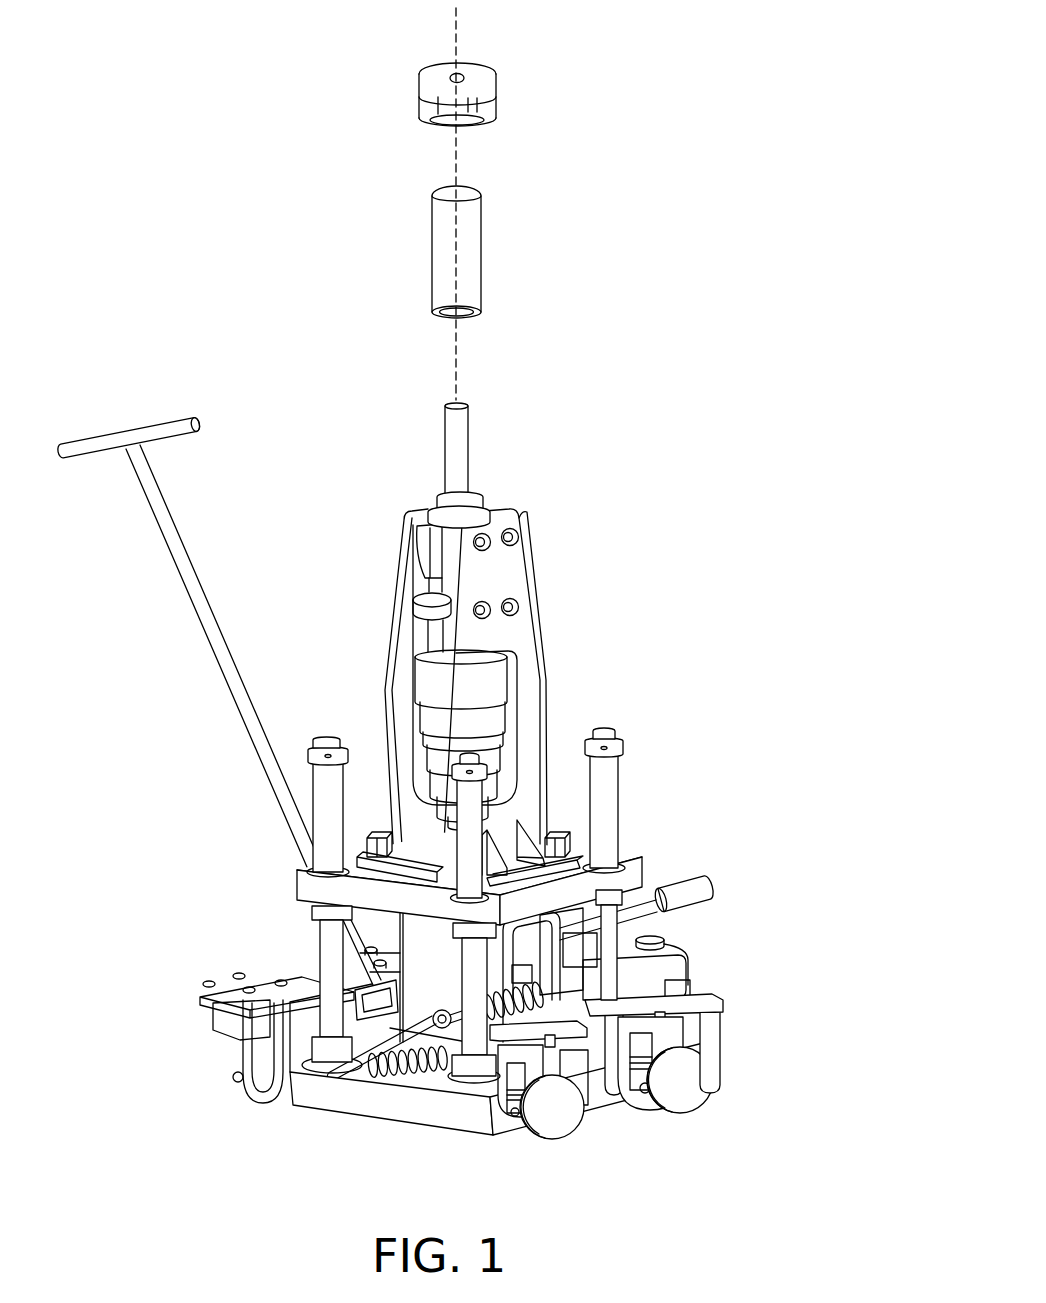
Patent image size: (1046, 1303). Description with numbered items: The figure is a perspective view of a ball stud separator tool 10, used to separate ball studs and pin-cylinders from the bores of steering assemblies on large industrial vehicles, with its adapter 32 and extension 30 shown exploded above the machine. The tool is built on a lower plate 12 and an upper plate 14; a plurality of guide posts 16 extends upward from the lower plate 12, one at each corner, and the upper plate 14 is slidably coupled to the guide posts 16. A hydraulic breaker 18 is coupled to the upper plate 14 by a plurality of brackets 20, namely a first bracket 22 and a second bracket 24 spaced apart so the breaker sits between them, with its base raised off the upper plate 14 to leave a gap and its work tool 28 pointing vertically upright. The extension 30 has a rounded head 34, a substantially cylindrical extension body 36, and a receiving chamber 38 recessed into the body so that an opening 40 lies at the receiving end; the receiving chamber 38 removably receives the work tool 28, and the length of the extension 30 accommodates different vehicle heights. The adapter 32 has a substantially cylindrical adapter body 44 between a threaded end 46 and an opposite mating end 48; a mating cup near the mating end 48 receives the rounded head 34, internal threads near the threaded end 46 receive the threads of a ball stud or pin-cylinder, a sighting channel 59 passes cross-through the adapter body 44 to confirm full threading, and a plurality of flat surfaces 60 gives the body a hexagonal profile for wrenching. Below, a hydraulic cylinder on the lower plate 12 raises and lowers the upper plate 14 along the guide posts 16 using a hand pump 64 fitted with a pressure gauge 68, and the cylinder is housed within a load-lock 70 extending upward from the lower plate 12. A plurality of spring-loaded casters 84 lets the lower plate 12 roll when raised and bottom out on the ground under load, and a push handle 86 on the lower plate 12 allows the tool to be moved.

The ball stud separator tool 10 is at (402, 595).
The lower plate 12 is at (360, 1100).
The upper plate 14 is at (298, 885).
The plurality of guide posts 16 is at (322, 782).
The hydraulic breaker 18 is at (433, 682).
The plurality of brackets 20 is at (492, 684).
The first bracket 22 is at (533, 600).
The second bracket 24 is at (404, 540).
The work tool 28 is at (464, 438).
The extension 30 is at (464, 243).
The adapter 32 is at (453, 95).
The rounded head 34 is at (447, 186).
The extension body 36 is at (462, 268).
The receiving chamber 38 is at (450, 314).
The opening 40 is at (480, 312).
The adapter body 44 is at (440, 88).
The threaded end 46 is at (474, 62).
The mating end 48 is at (478, 124).
The sighting channel 59 is at (455, 74).
The plurality of flat surfaces 60 is at (460, 106).
The hand pump 64 is at (617, 965).
The pressure gauge 68 is at (446, 1028).
The load-lock 70 is at (392, 940).
The plurality of casters 84 is at (207, 990).
The push handle 86 is at (178, 556).